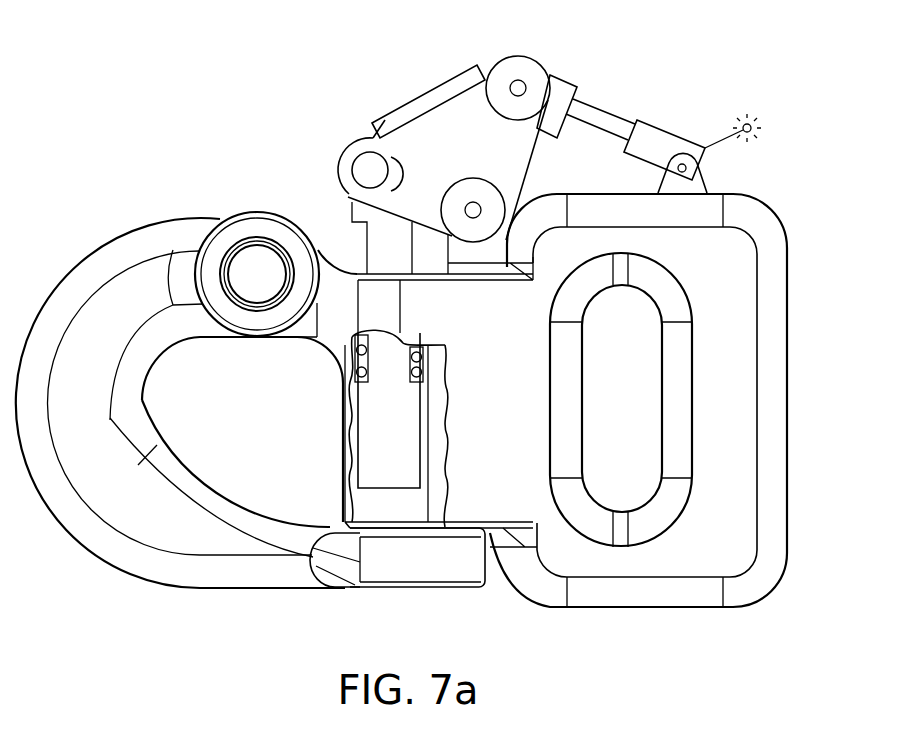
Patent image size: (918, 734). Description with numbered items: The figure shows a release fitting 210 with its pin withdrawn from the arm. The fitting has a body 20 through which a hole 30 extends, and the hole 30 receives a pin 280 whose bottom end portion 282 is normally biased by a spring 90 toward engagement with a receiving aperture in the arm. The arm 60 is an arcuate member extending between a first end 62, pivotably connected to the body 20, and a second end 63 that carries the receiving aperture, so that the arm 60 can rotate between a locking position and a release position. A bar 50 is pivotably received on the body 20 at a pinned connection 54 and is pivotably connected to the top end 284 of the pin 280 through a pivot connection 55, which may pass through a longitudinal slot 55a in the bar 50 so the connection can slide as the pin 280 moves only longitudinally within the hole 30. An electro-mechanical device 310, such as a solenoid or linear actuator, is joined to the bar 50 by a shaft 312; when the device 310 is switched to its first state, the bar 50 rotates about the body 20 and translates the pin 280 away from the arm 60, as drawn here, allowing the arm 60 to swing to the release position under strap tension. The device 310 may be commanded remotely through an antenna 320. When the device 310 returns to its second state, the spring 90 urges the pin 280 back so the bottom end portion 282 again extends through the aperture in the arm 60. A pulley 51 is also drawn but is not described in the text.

The body 20 is at (688, 552).
The hole 30 is at (413, 506).
The bar 50 is at (433, 130).
The pulley 51 is at (526, 80).
The pinned connection 54 is at (481, 204).
The pivot connection 55 is at (363, 160).
The longitudinal slot 55a is at (398, 160).
The arm 60 is at (191, 540).
The first end 62 is at (147, 242).
The second end 63 is at (398, 558).
The spring 90 is at (418, 357).
The release fitting 210 is at (562, 552).
The pin 280 is at (405, 427).
The bottom end portion 282 is at (400, 466).
The top end 284 is at (390, 249).
The electro-mechanical device 310 is at (662, 140).
The shaft 312 is at (592, 118).
The antenna 320 is at (752, 124).